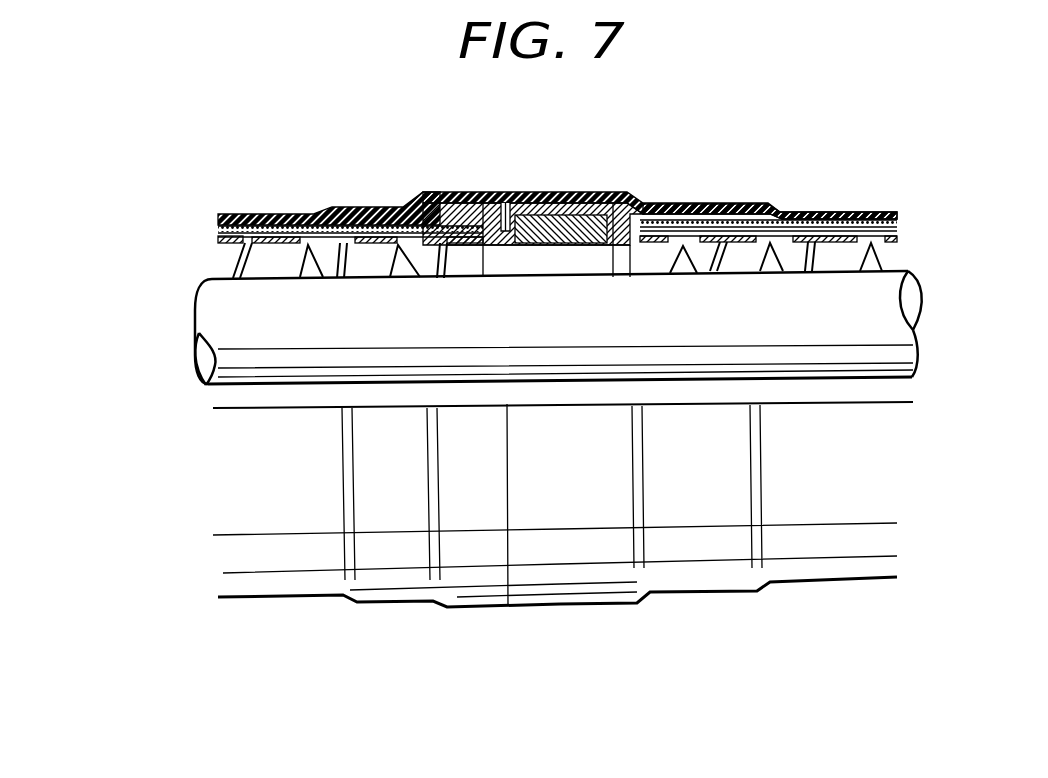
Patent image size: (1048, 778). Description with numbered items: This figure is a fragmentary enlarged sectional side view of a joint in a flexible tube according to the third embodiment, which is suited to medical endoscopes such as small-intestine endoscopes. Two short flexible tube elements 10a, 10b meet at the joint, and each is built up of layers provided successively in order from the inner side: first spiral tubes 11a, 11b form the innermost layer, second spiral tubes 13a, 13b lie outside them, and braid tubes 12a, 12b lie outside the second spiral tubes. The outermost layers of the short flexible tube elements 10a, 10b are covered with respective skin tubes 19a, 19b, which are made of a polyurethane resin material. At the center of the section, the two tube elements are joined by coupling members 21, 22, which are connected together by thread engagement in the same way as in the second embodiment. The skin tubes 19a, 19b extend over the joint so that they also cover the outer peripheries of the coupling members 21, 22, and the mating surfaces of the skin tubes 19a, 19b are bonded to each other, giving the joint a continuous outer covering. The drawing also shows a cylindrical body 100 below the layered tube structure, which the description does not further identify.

The short flexible tube element 10a is at (297, 620).
The short flexible tube element 10b is at (832, 600).
The first spiral tube 11a is at (243, 247).
The first spiral tube 11b is at (873, 238).
The braid tube 12a is at (218, 228).
The braid tube 12b is at (897, 221).
The second spiral tube 13a is at (218, 238).
The second spiral tube 13b is at (897, 227).
The skin tube 19a is at (268, 217).
The skin tube 19b is at (858, 212).
The coupling member 21 is at (485, 202).
The coupling member 22 is at (631, 192).
The roller 100 is at (880, 352).